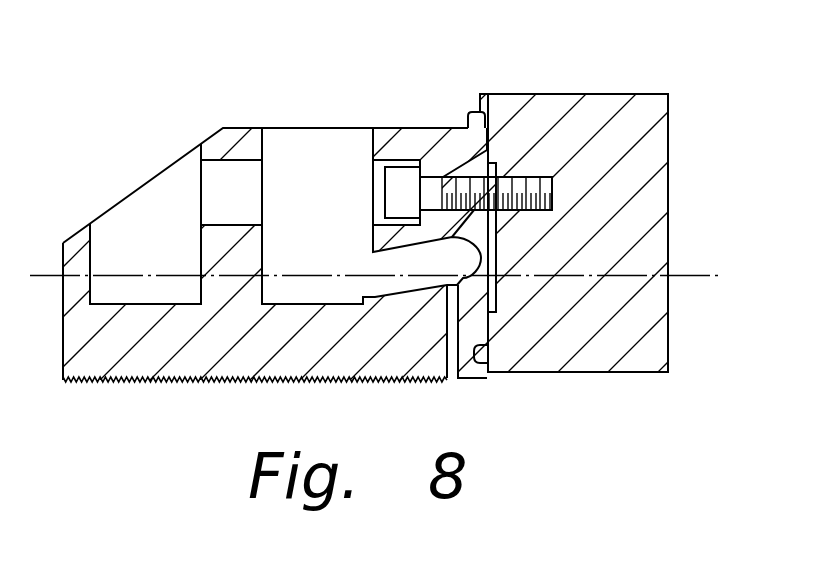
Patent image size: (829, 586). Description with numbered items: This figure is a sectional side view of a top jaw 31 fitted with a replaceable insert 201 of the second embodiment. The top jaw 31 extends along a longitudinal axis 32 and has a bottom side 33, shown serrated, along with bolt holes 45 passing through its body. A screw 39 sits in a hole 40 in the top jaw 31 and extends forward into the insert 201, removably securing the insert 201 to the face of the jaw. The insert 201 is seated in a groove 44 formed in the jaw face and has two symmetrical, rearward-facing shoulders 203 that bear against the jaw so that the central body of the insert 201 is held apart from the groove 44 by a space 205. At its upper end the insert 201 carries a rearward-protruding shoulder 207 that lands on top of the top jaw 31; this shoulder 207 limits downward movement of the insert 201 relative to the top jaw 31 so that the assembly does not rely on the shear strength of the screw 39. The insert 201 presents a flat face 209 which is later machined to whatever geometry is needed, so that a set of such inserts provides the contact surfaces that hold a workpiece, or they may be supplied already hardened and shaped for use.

The top jaw 31 is at (136, 155).
The bottom side 33 is at (250, 381).
The bolt holes 45 is at (263, 151).
The groove 44 is at (487, 363).
The hole 40 is at (442, 178).
The screw 39 is at (527, 177).
The rearward-facing shoulders 203 is at (466, 126).
The rearward-protruding shoulder 207 is at (480, 93).
The replaceable insert 201 is at (660, 116).
The flat face 209 is at (668, 152).
The space 205 is at (490, 292).
The longitudinal axis 32 is at (695, 275).